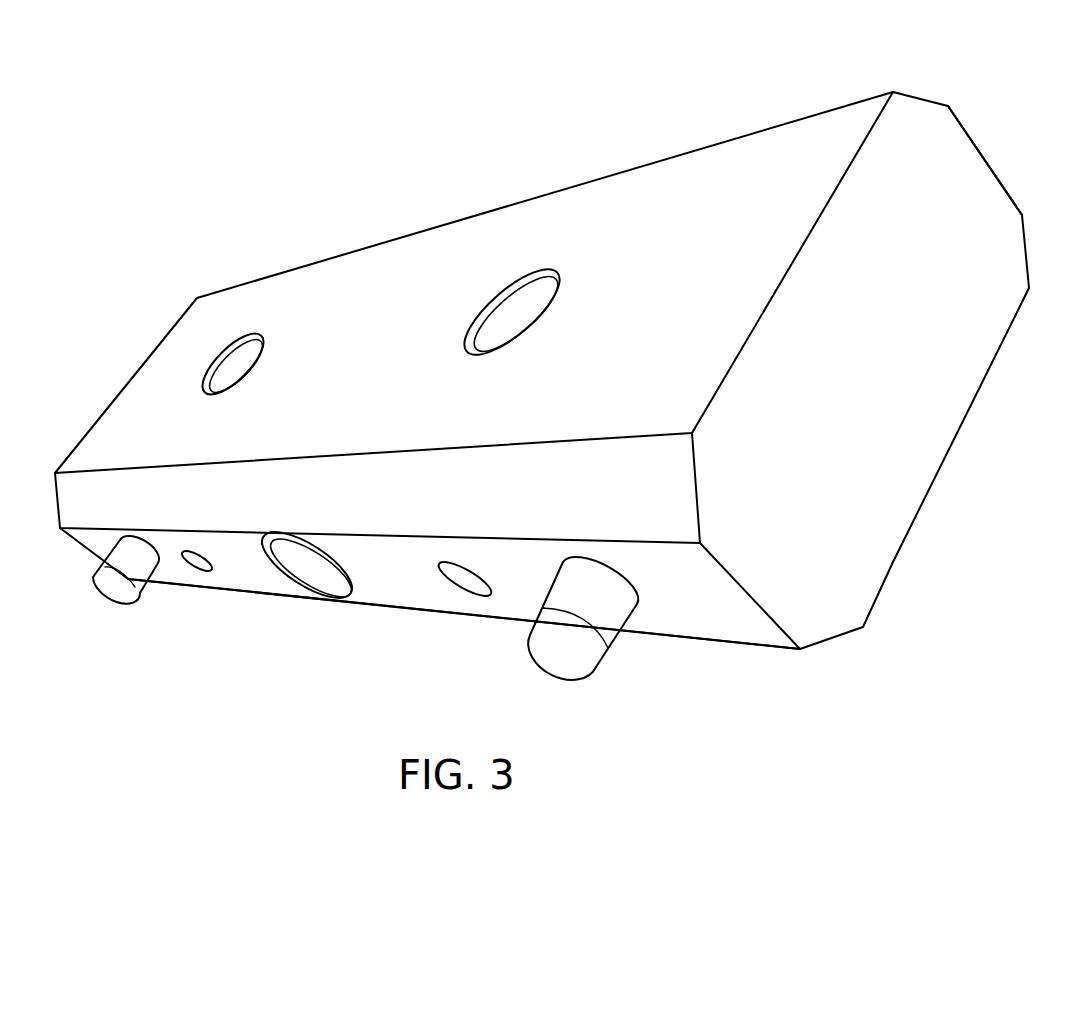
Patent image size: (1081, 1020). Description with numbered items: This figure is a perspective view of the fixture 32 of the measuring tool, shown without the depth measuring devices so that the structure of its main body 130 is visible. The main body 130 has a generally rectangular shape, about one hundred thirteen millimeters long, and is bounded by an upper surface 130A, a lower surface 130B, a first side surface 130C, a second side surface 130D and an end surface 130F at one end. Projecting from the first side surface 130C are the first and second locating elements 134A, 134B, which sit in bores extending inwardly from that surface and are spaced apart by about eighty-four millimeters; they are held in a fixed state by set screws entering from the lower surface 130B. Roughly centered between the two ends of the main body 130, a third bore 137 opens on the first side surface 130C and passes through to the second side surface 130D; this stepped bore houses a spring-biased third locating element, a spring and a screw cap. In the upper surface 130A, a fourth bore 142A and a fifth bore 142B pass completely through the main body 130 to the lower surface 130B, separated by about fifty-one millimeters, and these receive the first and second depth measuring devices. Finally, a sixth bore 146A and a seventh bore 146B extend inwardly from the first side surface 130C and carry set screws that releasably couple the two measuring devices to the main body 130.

The fixture 32 is at (748, 694).
The main body 130 is at (553, 360).
The upper surface 130A is at (622, 187).
The lower surface 130B is at (945, 459).
The first side surface 130C is at (389, 600).
The second side surface 130D is at (992, 171).
The second end surface 130F is at (882, 563).
The first locating element 134A is at (106, 593).
The second locating element 134B is at (582, 668).
The third bore 137 is at (303, 565).
The fourth bore 142A is at (253, 362).
The fifth bore 142B is at (468, 328).
The sixth bore 146A is at (195, 570).
The seventh bore 146B is at (461, 592).